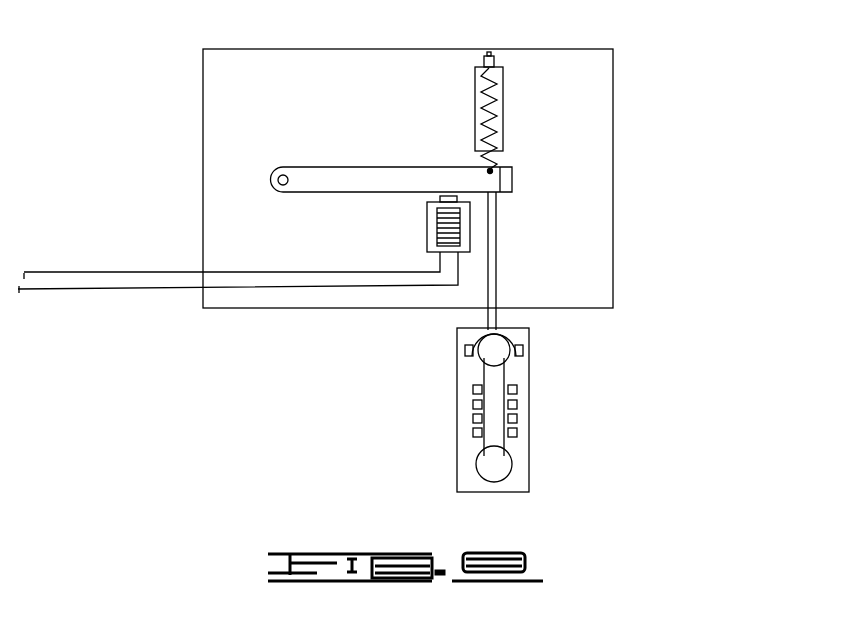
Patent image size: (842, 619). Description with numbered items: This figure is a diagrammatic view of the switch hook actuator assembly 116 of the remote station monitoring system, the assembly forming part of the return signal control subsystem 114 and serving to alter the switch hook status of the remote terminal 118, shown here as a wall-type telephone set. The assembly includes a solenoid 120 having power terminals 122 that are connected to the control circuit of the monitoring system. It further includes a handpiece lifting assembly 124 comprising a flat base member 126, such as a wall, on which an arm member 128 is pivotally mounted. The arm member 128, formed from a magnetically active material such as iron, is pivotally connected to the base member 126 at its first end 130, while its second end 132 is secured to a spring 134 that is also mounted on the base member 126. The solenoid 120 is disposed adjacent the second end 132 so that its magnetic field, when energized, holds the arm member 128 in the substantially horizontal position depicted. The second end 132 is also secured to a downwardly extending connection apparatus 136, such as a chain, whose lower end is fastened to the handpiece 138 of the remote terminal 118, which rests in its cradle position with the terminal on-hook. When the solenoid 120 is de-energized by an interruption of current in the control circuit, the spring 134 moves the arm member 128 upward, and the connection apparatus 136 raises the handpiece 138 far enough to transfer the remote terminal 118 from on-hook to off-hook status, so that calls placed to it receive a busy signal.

The return signal control subsystem 114 is at (625, 93).
The switch hook actuator assembly 116 is at (626, 57).
The remote terminal 118 is at (496, 410).
The solenoid 120 is at (436, 215).
The power terminals 122 is at (440, 265).
The handpiece lifting assembly 124 is at (533, 110).
The flat base member 126 is at (213, 79).
The arm member 128 is at (418, 178).
The first end 130 is at (276, 193).
The second end 132 is at (514, 181).
The spring 134 is at (492, 100).
The connection apparatus 136 is at (497, 263).
The handpiece 138 is at (470, 361).